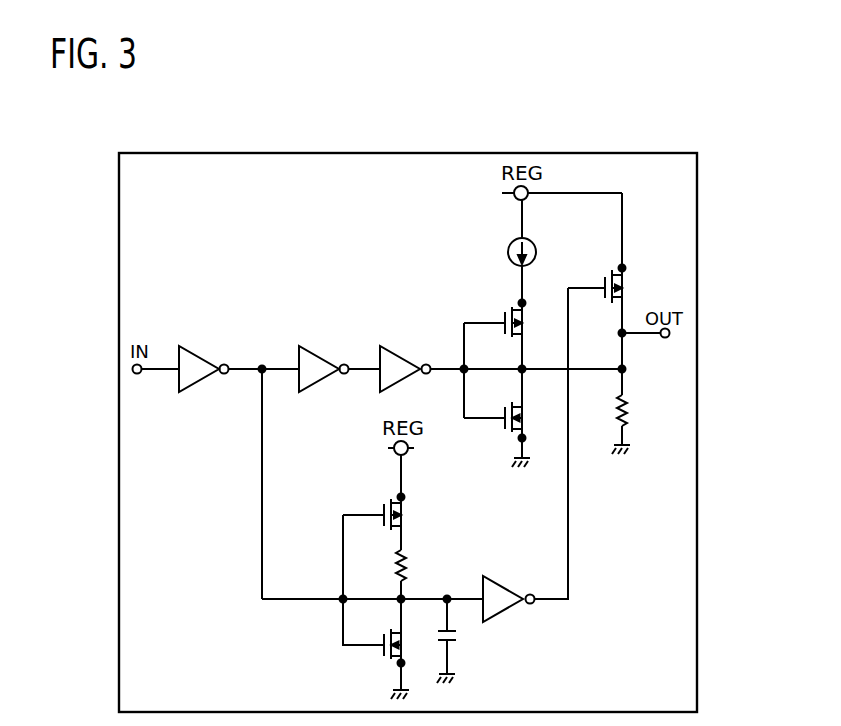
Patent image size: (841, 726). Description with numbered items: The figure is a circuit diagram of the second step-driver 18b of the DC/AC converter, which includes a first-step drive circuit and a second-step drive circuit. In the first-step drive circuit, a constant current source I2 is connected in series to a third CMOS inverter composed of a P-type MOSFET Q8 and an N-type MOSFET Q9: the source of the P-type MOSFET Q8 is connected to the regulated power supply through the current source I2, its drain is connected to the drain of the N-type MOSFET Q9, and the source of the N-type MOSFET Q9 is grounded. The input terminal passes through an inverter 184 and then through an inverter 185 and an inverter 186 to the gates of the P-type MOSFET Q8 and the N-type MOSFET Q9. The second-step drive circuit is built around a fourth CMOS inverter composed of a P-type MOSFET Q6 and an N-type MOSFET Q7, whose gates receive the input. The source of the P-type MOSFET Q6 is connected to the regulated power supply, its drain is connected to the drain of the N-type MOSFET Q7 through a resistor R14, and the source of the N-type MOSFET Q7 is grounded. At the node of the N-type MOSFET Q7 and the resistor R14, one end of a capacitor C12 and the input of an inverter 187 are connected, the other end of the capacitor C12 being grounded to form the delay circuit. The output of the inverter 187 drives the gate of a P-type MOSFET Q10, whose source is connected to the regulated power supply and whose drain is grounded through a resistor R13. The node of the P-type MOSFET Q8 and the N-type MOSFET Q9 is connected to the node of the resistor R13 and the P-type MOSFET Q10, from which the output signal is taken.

The second step-driver 18b is at (697, 300).
The first inverter 184 is at (208, 357).
The inverter 185 is at (323, 357).
The inverter 186 is at (408, 357).
The inverter 187 is at (510, 587).
The P-type MOSFET Q6 is at (410, 514).
The N-type MOSFET Q7 is at (410, 651).
The P-type MOSFET Q8 is at (532, 322).
The N-type MOSFET Q9 is at (531, 420).
The P-type MOSFET Q10 is at (637, 286).
The resistor R13 is at (642, 410).
The resistor R14 is at (421, 565).
The capacitor C12 is at (467, 636).
The constant current source I2 is at (510, 252).